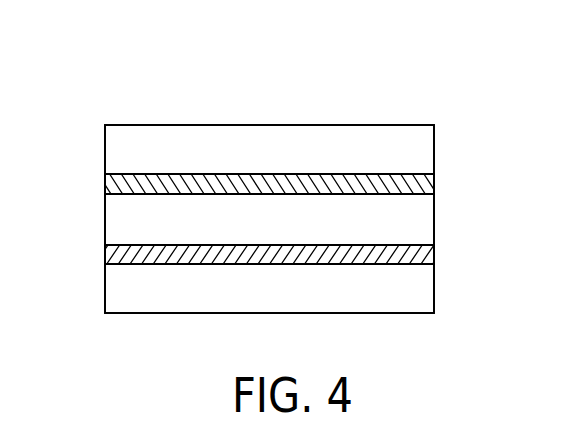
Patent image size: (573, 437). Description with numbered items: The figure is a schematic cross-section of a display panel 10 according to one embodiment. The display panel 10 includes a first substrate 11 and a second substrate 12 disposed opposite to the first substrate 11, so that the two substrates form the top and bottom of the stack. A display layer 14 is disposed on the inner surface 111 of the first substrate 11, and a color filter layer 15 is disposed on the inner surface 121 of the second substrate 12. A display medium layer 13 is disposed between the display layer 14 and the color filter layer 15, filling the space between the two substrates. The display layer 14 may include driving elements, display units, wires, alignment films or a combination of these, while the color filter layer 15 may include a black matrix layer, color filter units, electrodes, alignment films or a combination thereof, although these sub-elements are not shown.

The display panel 10 is at (128, 76).
The first substrate 11 is at (434, 288).
The inner surface of the first substrate 111 is at (424, 265).
The second substrate 12 is at (434, 148).
The inner surface of the second substrate 121 is at (428, 172).
The display medium layer 13 is at (434, 218).
The display layer 14 is at (105, 255).
The color filter layer 15 is at (105, 185).